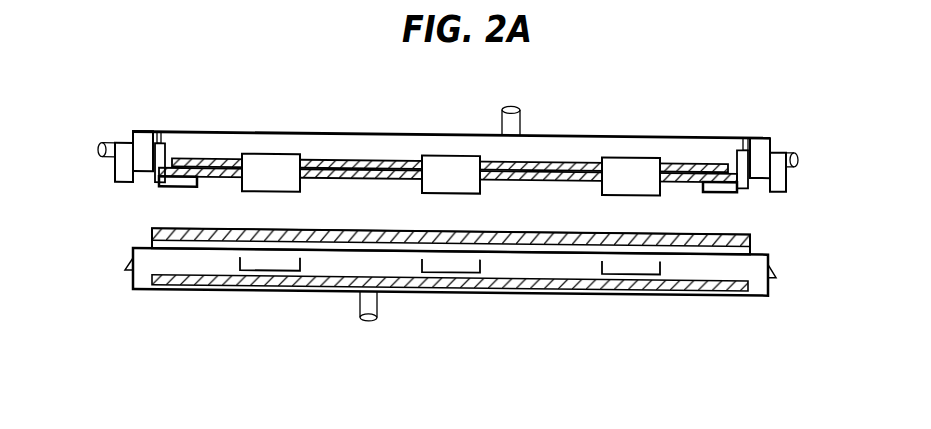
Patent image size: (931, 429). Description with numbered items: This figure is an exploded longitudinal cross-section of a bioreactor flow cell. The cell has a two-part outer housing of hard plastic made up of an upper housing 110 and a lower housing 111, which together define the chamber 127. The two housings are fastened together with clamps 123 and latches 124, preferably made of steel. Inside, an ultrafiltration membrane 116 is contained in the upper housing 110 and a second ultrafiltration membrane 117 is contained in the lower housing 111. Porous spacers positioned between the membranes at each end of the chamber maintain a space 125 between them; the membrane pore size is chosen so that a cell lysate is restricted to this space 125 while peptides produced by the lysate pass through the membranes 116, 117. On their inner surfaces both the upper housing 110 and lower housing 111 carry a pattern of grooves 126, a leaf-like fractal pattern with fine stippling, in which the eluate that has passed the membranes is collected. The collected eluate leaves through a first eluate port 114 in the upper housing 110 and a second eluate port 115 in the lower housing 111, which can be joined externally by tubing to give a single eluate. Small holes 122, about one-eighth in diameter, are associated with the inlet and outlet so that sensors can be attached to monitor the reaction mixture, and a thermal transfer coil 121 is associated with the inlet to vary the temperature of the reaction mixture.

The upper housing 110 is at (648, 134).
The lower housing 111 is at (239, 295).
The first eluate port 114 is at (517, 126).
The second eluate port 115 is at (378, 308).
The ultrafiltration membrane 116 is at (226, 182).
The ultrafiltration membrane 117 is at (695, 233).
The thermal transfer coil 121 is at (745, 166).
The small holes 122 is at (159, 143).
The clamps 123 is at (122, 160).
The latches 124 is at (482, 269).
The space 125 is at (385, 219).
The pattern of grooves 126 is at (580, 163).
The chamber 127 is at (144, 246).